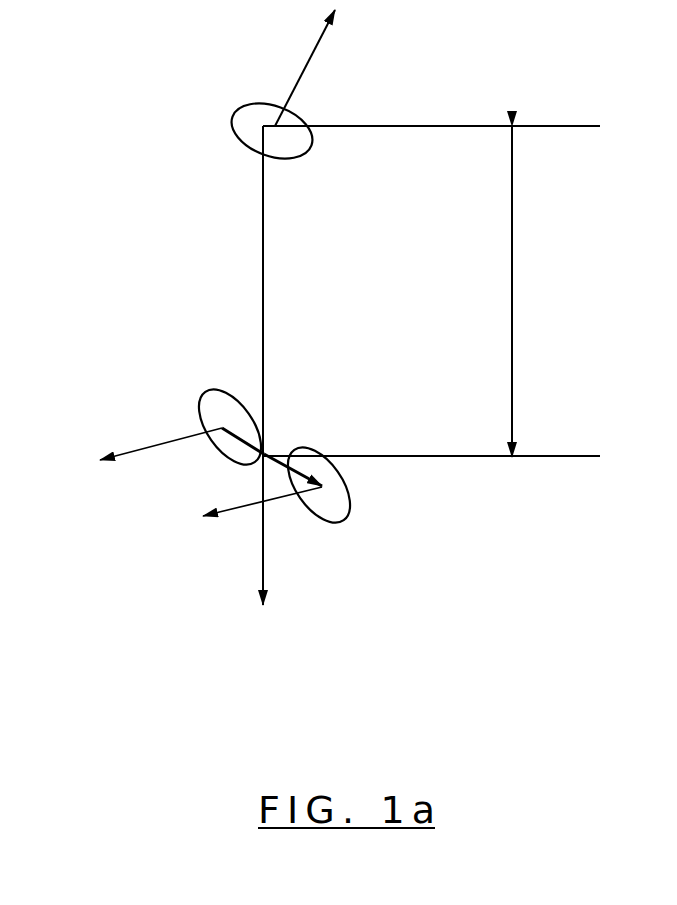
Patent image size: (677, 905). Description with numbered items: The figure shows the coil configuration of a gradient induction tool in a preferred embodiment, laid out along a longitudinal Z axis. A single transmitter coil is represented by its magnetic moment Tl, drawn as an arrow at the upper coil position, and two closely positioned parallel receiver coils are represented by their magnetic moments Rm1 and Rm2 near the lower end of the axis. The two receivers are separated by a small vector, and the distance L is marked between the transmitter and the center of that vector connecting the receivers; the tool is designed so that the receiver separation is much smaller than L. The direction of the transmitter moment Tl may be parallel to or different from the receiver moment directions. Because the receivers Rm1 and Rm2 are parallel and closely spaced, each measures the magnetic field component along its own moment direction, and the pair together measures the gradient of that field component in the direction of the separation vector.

The transmitter coil magnetic moment Tl is at (291, 89).
The distance between transmitter and receiver pair center L is at (498, 291).
The first receiver coil magnetic moment Rm1 is at (137, 459).
The second receiver coil magnetic moment Rm2 is at (237, 515).
The Z axis Z is at (285, 586).